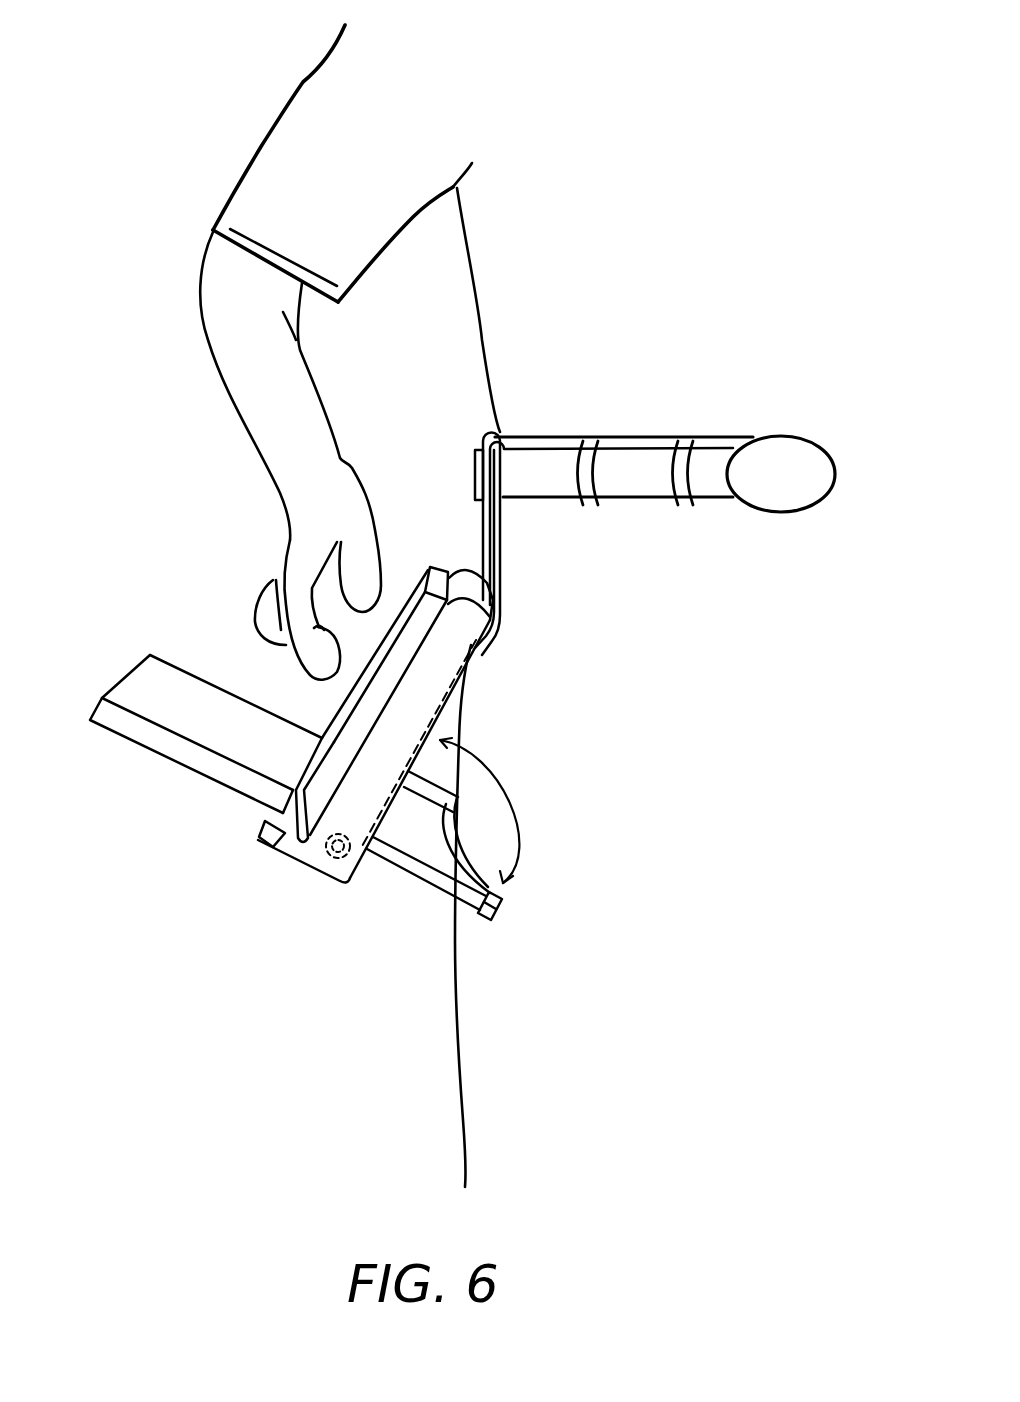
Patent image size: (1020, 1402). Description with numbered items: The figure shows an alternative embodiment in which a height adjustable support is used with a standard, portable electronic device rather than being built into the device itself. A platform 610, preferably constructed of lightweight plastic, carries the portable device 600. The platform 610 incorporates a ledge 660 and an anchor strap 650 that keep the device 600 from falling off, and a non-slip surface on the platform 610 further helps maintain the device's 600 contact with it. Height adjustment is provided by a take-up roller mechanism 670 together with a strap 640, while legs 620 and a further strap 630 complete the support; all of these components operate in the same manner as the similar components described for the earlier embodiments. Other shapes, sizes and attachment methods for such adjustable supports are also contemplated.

The portable device 600 is at (438, 573).
The platform 610 is at (318, 867).
The legs 620 is at (500, 914).
The strap 630 is at (452, 826).
The strap 640 is at (505, 540).
The anchor strap 650 is at (259, 847).
The ledge 660 is at (263, 828).
The take-up roller mechanism 670 is at (350, 858).